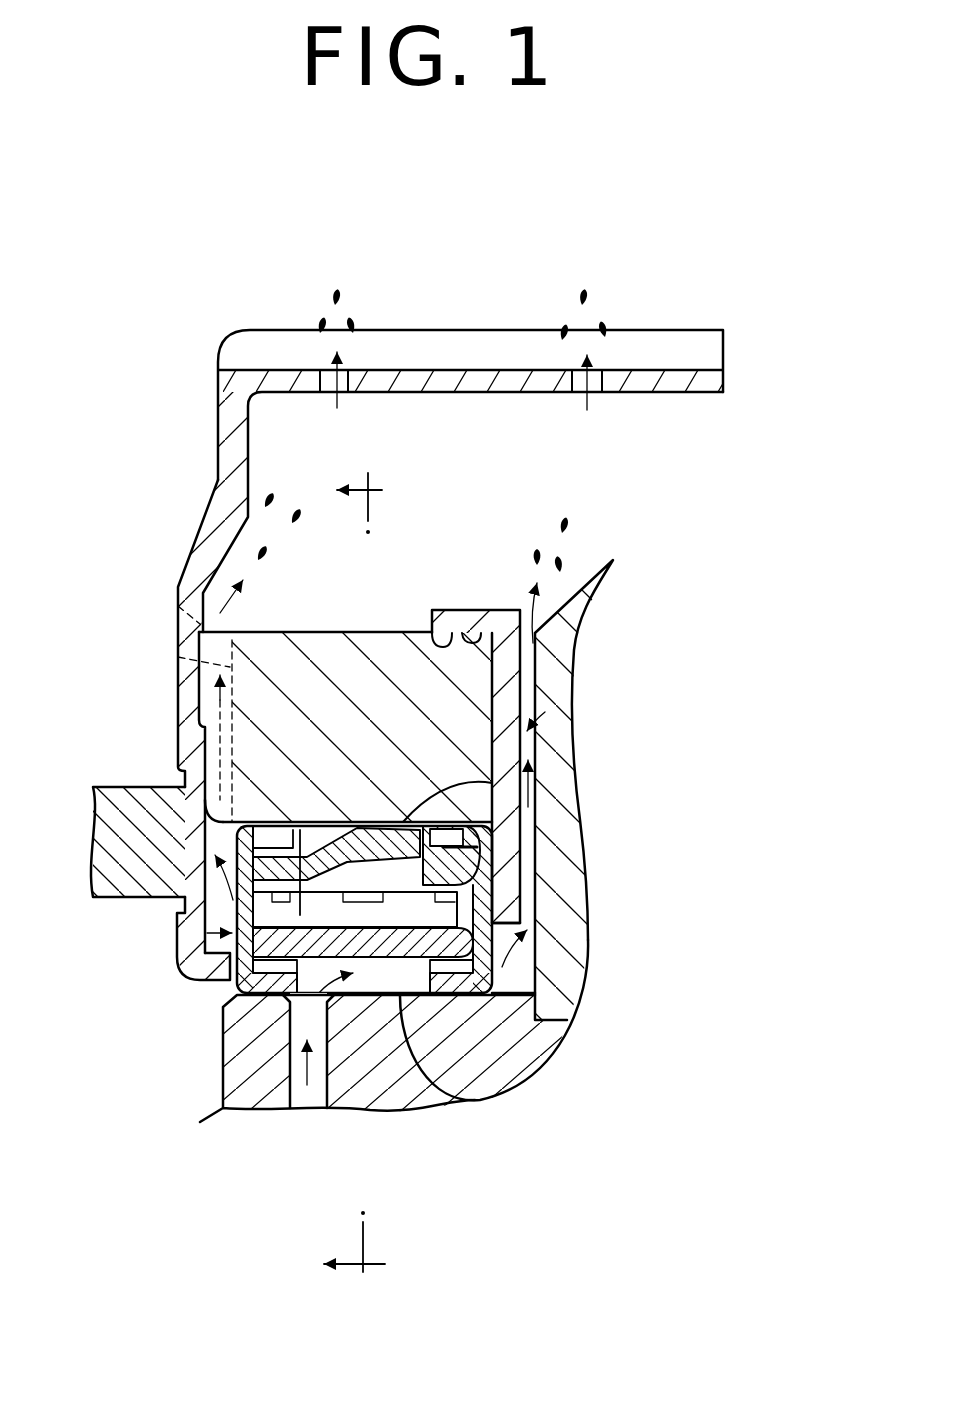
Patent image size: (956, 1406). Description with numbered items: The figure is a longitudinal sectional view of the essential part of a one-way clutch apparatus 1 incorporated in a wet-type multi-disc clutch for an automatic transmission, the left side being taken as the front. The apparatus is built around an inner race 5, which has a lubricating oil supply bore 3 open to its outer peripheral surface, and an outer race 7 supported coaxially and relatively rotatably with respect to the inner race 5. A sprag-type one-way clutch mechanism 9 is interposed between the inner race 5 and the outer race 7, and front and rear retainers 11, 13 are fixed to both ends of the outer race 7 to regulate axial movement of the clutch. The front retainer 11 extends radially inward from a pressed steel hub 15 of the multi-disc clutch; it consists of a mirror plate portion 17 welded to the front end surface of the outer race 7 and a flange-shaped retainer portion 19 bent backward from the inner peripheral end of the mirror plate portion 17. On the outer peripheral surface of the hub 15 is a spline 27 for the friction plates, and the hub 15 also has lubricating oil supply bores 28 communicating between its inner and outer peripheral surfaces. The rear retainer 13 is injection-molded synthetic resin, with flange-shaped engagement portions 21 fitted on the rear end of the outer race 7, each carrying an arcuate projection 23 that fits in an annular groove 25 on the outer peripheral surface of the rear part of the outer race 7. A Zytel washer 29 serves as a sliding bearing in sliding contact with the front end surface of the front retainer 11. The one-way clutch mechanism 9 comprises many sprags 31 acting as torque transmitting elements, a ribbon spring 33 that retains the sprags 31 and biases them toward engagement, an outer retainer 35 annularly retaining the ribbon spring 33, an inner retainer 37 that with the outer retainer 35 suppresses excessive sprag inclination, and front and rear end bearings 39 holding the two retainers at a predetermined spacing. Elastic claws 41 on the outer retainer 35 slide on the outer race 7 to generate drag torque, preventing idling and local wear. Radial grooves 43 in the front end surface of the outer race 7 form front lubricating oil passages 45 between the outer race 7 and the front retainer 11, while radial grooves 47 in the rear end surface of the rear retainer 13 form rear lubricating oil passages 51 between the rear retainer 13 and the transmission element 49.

The one-way clutch apparatus 1 is at (140, 410).
The lubricating oil supply bore 3 is at (302, 1093).
The inner race 5 is at (395, 1088).
The outer race 7 is at (312, 645).
The one-way clutch mechanism 9 is at (203, 940).
The front retainer 11 is at (186, 712).
The rear retainer 13 is at (542, 717).
The hub 15 is at (420, 322).
The mirror plate portion 17 is at (190, 752).
The retainer portion 19 is at (217, 968).
The engagement portions 21 is at (492, 625).
The arcuate projection 23 is at (447, 630).
The annular groove 25 is at (437, 617).
The spline 27 is at (657, 353).
The lubricating oil supply bores 28 is at (338, 400).
The Zytel washer 29 is at (118, 888).
The sprags 31 is at (482, 1098).
The ribbon spring 33 is at (462, 897).
The outer retainer 35 is at (478, 845).
The inner retainer 37 is at (503, 1023).
The end bearings 39 is at (502, 973).
The elastic claws 41 is at (492, 783).
The radial grooves 43 is at (178, 657).
The front lubricating oil passages 45 is at (178, 606).
The radial grooves 47 is at (532, 905).
The transmission element 49 is at (570, 938).
The rear lubricating oil passages 51 is at (576, 660).